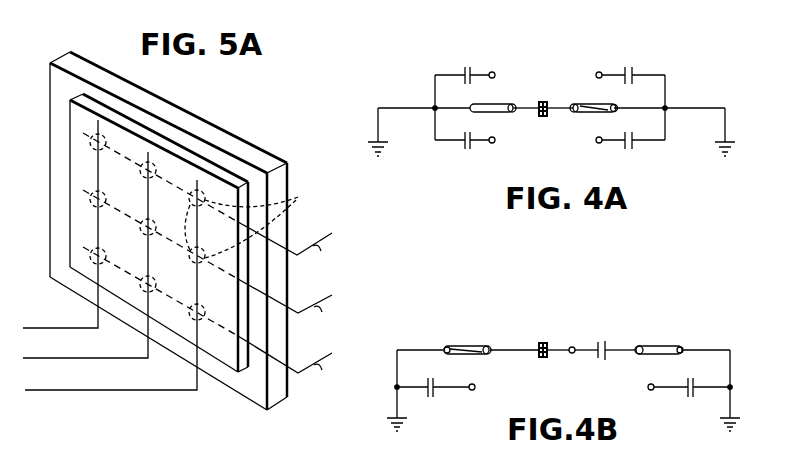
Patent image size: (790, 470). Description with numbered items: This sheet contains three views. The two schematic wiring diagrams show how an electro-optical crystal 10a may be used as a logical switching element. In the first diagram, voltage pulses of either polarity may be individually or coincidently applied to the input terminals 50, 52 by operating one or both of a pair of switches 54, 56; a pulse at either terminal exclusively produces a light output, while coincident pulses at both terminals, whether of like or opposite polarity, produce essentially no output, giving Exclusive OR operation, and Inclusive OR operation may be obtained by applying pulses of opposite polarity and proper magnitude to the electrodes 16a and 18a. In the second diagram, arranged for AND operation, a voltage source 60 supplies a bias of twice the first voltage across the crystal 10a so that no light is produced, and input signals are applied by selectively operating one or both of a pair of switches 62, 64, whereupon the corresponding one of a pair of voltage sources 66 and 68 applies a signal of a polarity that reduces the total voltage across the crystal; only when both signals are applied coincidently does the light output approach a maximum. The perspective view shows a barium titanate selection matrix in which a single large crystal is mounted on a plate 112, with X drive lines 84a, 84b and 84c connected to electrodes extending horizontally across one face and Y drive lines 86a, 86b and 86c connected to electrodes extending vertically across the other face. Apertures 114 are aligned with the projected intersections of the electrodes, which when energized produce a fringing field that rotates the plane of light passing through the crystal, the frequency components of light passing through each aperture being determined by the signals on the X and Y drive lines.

In FIG. 5A, the plate 112 is at (195, 122).
In FIG. 5A, the apertures 114 is at (191, 201).
In FIG. 5A, the X drive line 84a is at (221, 199).
In FIG. 5A, the X drive line 84b is at (222, 257).
In FIG. 5A, the X drive line 84c is at (221, 315).
In FIG. 5A, the Y drive line 86a is at (72, 328).
In FIG. 5A, the Y drive line 86b is at (84, 358).
In FIG. 5A, the Y drive line 86c is at (96, 390).
In FIG. 4A, the input terminal 50 is at (512, 103).
In FIG. 4B, the input terminal 50 is at (488, 346).
In FIG. 4A, the input terminal 52 is at (573, 103).
In FIG. 4B, the input terminal 52 is at (572, 346).
In FIG. 4A, the switch 54 is at (474, 156).
In FIG. 4A, the switch 56 is at (589, 106).
In FIG. 4A, the crystal 10a is at (539, 103).
In FIG. 4B, the crystal 10a is at (542, 343).
In FIG. 4A, the electrode 16a is at (541, 116).
In FIG. 4B, the electrode 16a is at (540, 358).
In FIG. 4A, the electrode 18a is at (548, 114).
In FIG. 4B, the electrode 18a is at (548, 357).
In FIG. 4B, the voltage source 60 is at (606, 346).
In FIG. 4B, the switch 62 is at (470, 354).
In FIG. 4B, the switch 64 is at (660, 347).
In FIG. 4B, the voltage source 66 is at (434, 396).
In FIG. 4B, the voltage source 68 is at (688, 393).